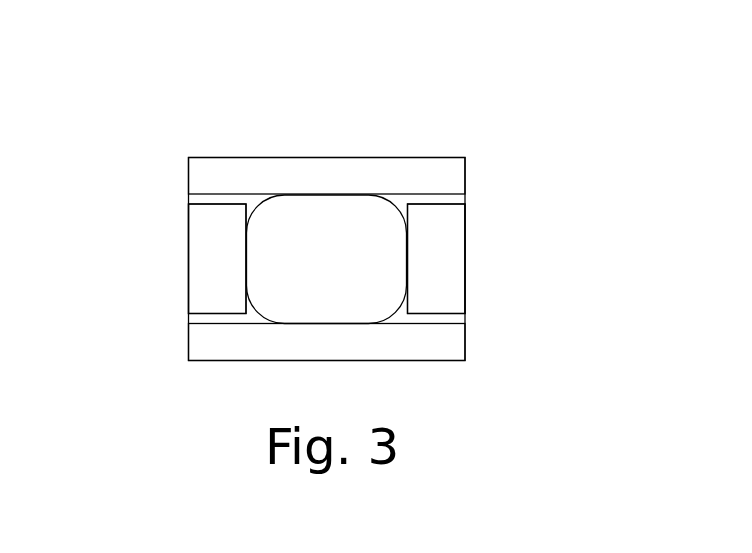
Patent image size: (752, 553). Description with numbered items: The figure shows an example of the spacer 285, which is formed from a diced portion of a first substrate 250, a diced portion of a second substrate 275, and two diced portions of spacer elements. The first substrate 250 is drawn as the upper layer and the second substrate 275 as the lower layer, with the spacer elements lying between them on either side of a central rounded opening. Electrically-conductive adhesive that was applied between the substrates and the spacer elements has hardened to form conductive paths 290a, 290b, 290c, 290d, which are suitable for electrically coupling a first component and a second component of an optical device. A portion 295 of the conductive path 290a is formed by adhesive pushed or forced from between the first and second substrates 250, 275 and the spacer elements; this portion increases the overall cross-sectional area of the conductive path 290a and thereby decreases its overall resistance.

The spacer 285 is at (84, 92).
The first substrate 250 is at (452, 170).
The second substrate 275 is at (233, 345).
The conductive path 290a is at (217, 320).
The conductive path 290b is at (218, 201).
The conductive path 290c is at (434, 201).
The conductive path 290d is at (445, 317).
The central lumen 295 is at (252, 202).